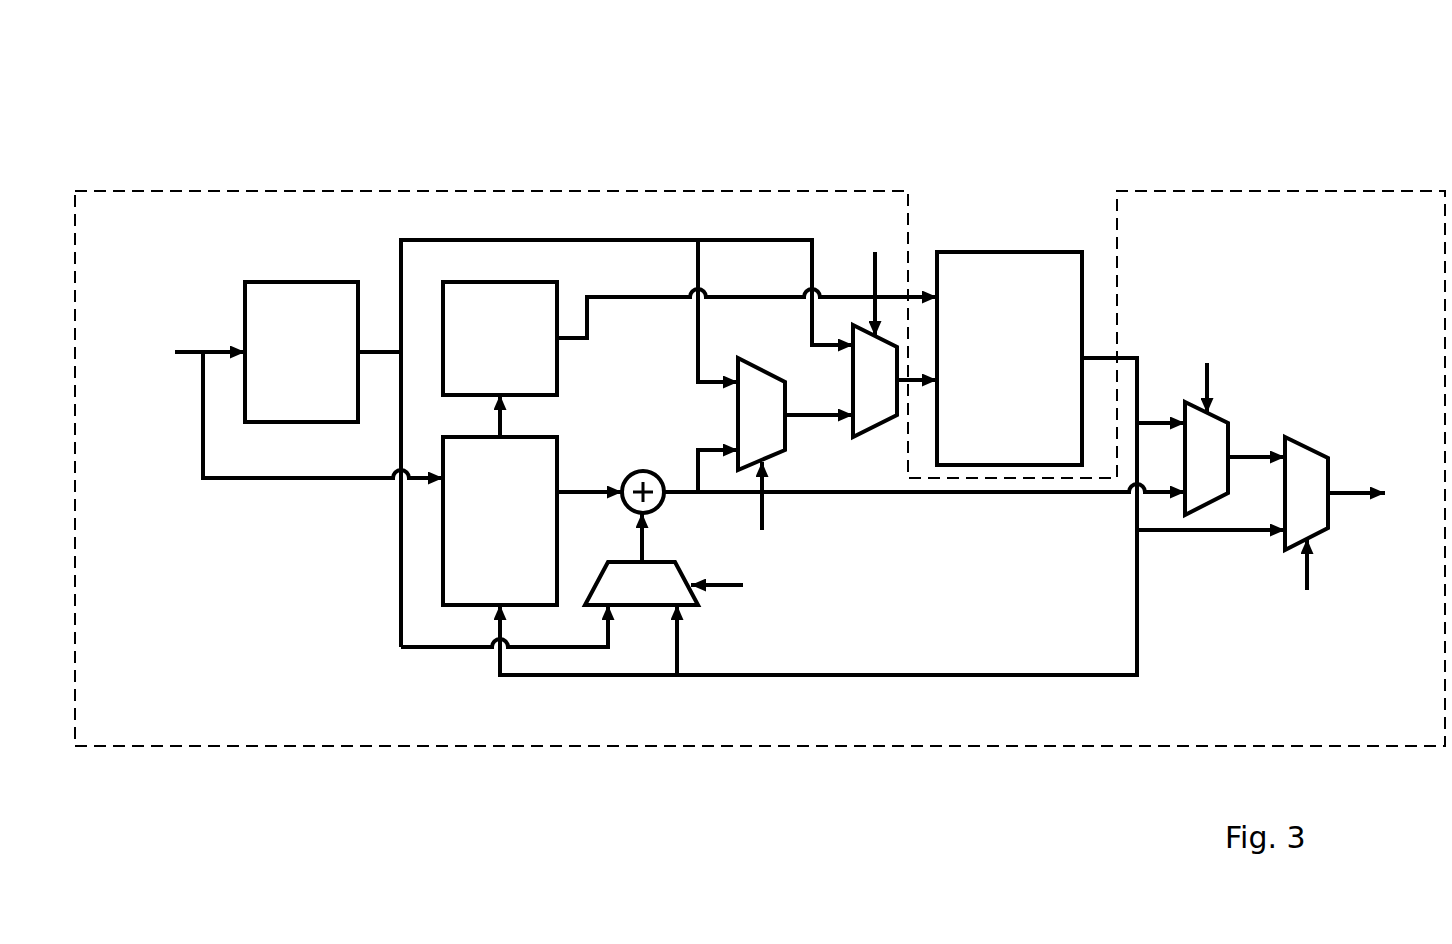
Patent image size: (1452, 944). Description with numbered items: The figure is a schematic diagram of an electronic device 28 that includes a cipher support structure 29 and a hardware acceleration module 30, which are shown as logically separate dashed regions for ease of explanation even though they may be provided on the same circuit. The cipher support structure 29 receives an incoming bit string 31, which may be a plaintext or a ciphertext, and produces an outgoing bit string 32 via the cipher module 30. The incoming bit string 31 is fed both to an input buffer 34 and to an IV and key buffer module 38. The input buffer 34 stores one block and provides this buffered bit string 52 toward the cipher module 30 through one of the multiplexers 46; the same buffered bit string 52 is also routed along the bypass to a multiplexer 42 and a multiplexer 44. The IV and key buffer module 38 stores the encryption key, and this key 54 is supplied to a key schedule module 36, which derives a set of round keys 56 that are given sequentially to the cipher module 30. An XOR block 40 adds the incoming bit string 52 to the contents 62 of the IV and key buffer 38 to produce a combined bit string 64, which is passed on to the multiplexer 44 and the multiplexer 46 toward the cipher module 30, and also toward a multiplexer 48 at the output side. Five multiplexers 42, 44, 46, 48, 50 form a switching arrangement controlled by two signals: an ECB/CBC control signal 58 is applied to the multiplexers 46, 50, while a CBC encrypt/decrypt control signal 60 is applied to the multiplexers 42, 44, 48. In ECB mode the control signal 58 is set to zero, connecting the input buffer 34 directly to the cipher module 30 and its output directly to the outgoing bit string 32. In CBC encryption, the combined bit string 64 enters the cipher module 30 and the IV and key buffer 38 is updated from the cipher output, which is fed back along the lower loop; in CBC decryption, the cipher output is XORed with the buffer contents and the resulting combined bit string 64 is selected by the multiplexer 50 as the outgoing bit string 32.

The electronic device 28 is at (327, 126).
The cipher support structure 29 is at (700, 190).
The hardware acceleration module 30 is at (993, 375).
The incoming bit string 31 is at (278, 408).
The outgoing bit string 32 is at (1377, 494).
The input buffer 34 is at (284, 369).
The key schedule module 36 is at (483, 355).
The IV and key buffer module 38 is at (483, 542).
The XOR block 40 is at (643, 470).
The multiplexer 42 is at (690, 598).
The multiplexer 44 is at (785, 440).
The multiplexer 46 is at (852, 393).
The multiplexer 48 is at (1227, 420).
The multiplexer 50 is at (1307, 443).
The buffered incoming bit string 52 is at (400, 258).
The key 54 is at (505, 425).
The round keys 56 is at (630, 298).
The ECB/CBC control signal 58 is at (1090, 422).
The CBC encrypt/decrypt control signal 60 is at (959, 466).
The contents of the IV and key buffer 62 is at (572, 497).
The combined bit string 64 is at (678, 497).